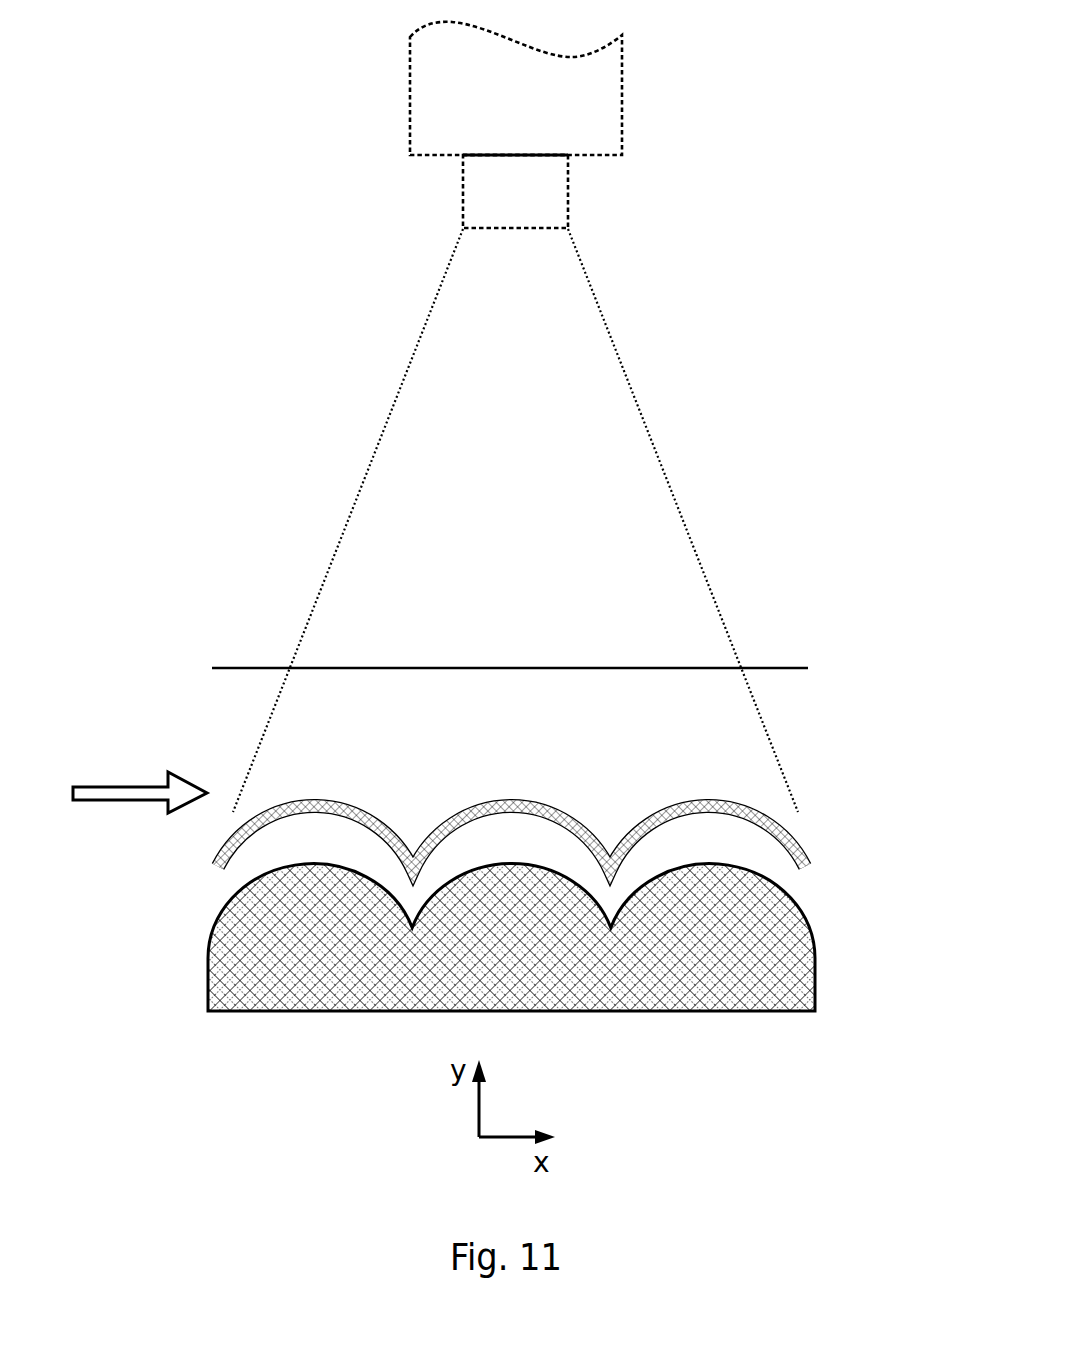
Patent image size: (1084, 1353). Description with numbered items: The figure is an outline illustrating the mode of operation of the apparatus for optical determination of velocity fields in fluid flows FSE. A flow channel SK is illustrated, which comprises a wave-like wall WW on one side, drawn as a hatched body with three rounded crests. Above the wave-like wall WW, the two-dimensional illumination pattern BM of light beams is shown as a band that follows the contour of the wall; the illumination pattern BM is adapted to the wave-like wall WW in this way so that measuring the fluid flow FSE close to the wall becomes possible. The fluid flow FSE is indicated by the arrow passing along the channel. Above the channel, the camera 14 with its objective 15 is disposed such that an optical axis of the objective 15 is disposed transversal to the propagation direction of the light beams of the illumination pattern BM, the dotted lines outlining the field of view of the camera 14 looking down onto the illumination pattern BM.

The camera 14 is at (622, 96).
The objective 15 is at (568, 188).
The fluid flow FSE is at (120, 785).
The illumination pattern BM is at (510, 800).
The flow channel SK is at (843, 818).
The wave-like wall WW is at (815, 960).